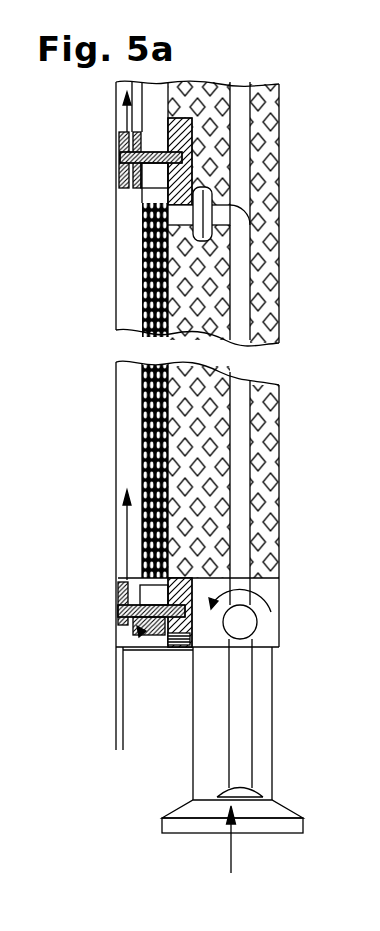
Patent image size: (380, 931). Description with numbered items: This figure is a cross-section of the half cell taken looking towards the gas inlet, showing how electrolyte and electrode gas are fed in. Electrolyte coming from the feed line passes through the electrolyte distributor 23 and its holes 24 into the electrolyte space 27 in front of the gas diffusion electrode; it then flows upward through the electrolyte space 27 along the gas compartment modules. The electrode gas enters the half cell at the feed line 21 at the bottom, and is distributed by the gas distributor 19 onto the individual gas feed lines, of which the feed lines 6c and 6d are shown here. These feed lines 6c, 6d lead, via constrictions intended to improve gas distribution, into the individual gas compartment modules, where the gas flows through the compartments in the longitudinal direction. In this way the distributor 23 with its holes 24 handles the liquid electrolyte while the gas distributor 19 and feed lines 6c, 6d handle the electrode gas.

The feed line 6c is at (242, 135).
The feed line 6d is at (242, 242).
The electrolyte space 27 is at (128, 425).
The electrolyte distributor 23 is at (267, 583).
The gas distributor 19 is at (245, 622).
The holes 24 is at (213, 620).
The gas inlet feed line 21 is at (240, 703).